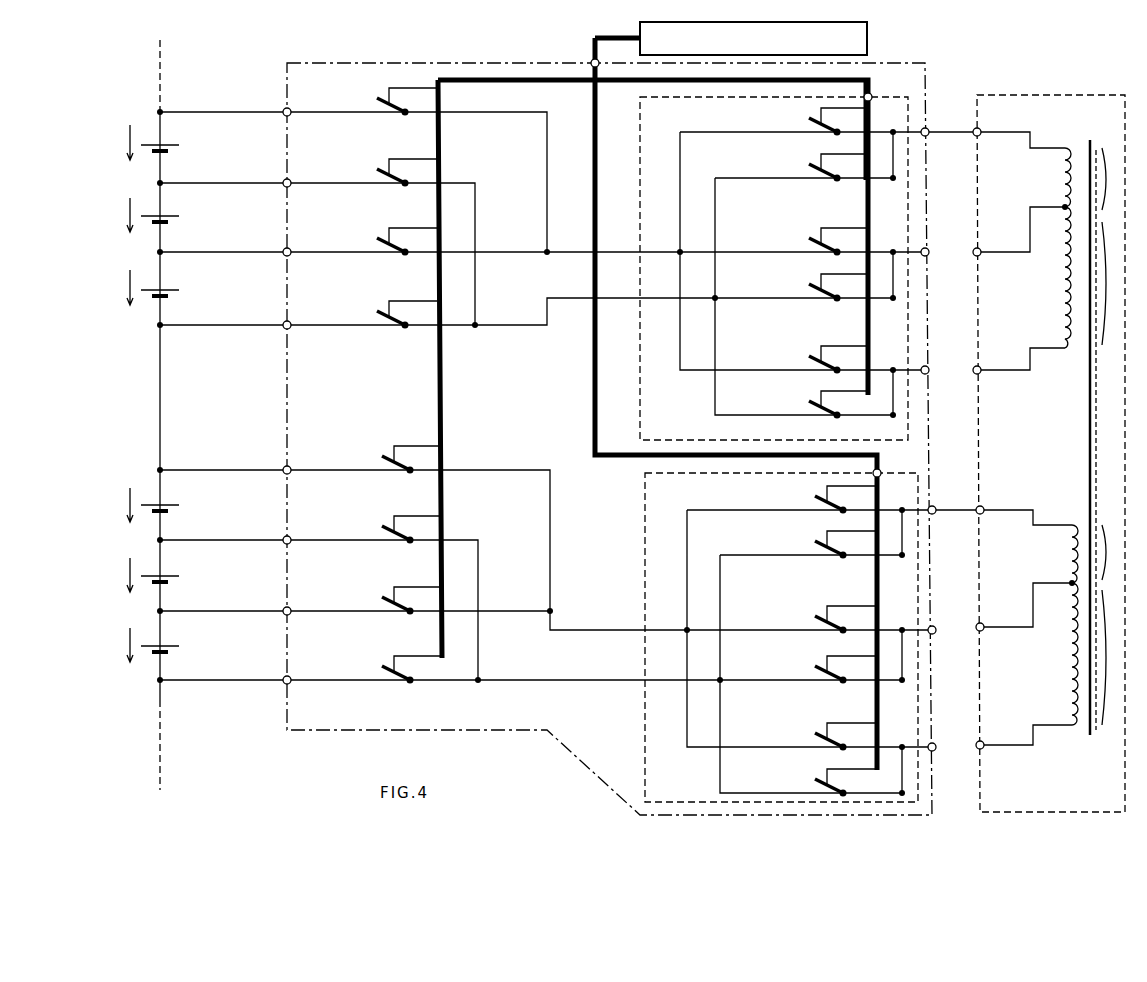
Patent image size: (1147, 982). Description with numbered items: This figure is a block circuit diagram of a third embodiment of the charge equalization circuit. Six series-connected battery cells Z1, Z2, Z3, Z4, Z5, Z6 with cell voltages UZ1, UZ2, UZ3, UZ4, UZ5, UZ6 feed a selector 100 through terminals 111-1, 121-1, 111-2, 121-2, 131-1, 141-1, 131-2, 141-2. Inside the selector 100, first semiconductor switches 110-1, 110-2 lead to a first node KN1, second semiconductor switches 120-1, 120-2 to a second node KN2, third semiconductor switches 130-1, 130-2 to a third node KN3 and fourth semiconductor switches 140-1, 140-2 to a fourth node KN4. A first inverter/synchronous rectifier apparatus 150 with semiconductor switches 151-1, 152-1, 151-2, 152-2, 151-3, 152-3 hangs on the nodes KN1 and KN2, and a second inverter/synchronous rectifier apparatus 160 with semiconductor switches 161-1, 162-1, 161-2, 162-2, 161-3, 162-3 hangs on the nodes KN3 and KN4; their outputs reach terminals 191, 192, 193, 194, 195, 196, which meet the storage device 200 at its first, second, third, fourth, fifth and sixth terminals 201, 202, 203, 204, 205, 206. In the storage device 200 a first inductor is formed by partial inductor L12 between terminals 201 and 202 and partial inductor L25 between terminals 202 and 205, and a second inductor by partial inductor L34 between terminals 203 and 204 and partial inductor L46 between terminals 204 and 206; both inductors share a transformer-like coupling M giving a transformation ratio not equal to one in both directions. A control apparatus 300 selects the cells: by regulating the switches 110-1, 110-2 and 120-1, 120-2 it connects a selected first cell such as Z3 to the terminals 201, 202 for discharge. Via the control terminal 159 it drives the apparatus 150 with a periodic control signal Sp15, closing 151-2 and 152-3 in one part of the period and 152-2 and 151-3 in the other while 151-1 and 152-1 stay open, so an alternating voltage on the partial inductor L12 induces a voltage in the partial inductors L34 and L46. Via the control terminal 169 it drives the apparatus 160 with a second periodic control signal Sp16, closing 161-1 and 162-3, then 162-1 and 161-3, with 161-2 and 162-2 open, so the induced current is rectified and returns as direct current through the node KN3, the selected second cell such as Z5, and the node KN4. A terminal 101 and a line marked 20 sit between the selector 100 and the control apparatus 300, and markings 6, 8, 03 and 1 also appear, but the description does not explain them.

The selector 100 is at (568, 758).
The first inverter/synchronous rectifier apparatus 150 is at (642, 388).
The second inverter/synchronous rectifier apparatus 160 is at (648, 508).
The storage device 200 is at (1010, 95).
The control apparatus 300 is at (770, 48).
The control connection line 20 is at (612, 38).
The terminal 101 is at (590, 62).
The control terminal 159 is at (870, 95).
The control terminal 169 is at (880, 473).
The terminal 191 is at (927, 128).
The terminal 192 is at (928, 247).
The terminal 193 is at (929, 366).
The terminal 194 is at (935, 506).
The terminal 195 is at (935, 626).
The terminal 196 is at (935, 743).
The first terminal 201 is at (981, 374).
The second terminal 202 is at (982, 257).
The third terminal 203 is at (984, 749).
The fourth terminal 204 is at (984, 632).
The fifth terminal 205 is at (981, 129).
The sixth terminal 206 is at (984, 505).
The first semiconductor switch 110-1 is at (390, 113).
The second semiconductor switch 120-1 is at (390, 184).
The first semiconductor switch 110-2 is at (390, 253).
The second semiconductor switch 120-2 is at (390, 326).
The third semiconductor switch 130-1 is at (395, 471).
The fourth semiconductor switch 140-1 is at (395, 541).
The third semiconductor switch 130-2 is at (395, 612).
The fourth semiconductor switch 140-2 is at (395, 681).
The terminal 111-1 is at (283, 109).
The terminal 121-1 is at (283, 180).
The terminal 111-2 is at (283, 249).
The terminal 121-2 is at (283, 322).
The terminal 131-1 is at (284, 467).
The terminal 141-1 is at (284, 537).
The terminal 131-2 is at (284, 608).
The terminal 141-2 is at (284, 677).
The semiconductor switch 151-1 is at (812, 138).
The semiconductor switch 152-1 is at (812, 183).
The semiconductor switch 151-2 is at (812, 257).
The semiconductor switch 152-2 is at (812, 303).
The semiconductor switch 151-3 is at (812, 375).
The semiconductor switch 152-3 is at (814, 420).
The semiconductor switch 161-1 is at (816, 515).
The semiconductor switch 162-1 is at (816, 560).
The semiconductor switch 161-2 is at (816, 635).
The semiconductor switch 162-2 is at (818, 685).
The semiconductor switch 161-3 is at (818, 752).
The semiconductor switch 162-3 is at (818, 796).
The first node KN1 is at (548, 249).
The second node KN2 is at (476, 329).
The third node KN3 is at (554, 612).
The fourth node KN4 is at (479, 684).
The periodic control signal Sp15 is at (872, 80).
The second periodic control signal Sp16 is at (592, 406).
The partial inductor L25 is at (1058, 195).
The partial inductor L12 is at (1058, 316).
The partial inductor L46 is at (1065, 573).
The partial inductor L34 is at (1060, 714).
The transformer-like coupling M is at (1085, 443).
The winding section 03 is at (1114, 364).
The winding section 1 is at (1112, 473).
The conductor 6 is at (596, 129).
The conductor 8 is at (488, 82).
The battery cell Z1 is at (170, 154).
The battery cell Z2 is at (170, 225).
The battery cell Z3 is at (170, 299).
The battery cell Z4 is at (172, 514).
The battery cell Z5 is at (172, 585).
The battery cell Z6 is at (172, 655).
The cell voltage UZ1 is at (120, 153).
The cell voltage UZ2 is at (120, 225).
The cell voltage UZ3 is at (120, 297).
The cell voltage UZ4 is at (120, 515).
The cell voltage UZ5 is at (120, 585).
The cell voltage UZ6 is at (120, 655).